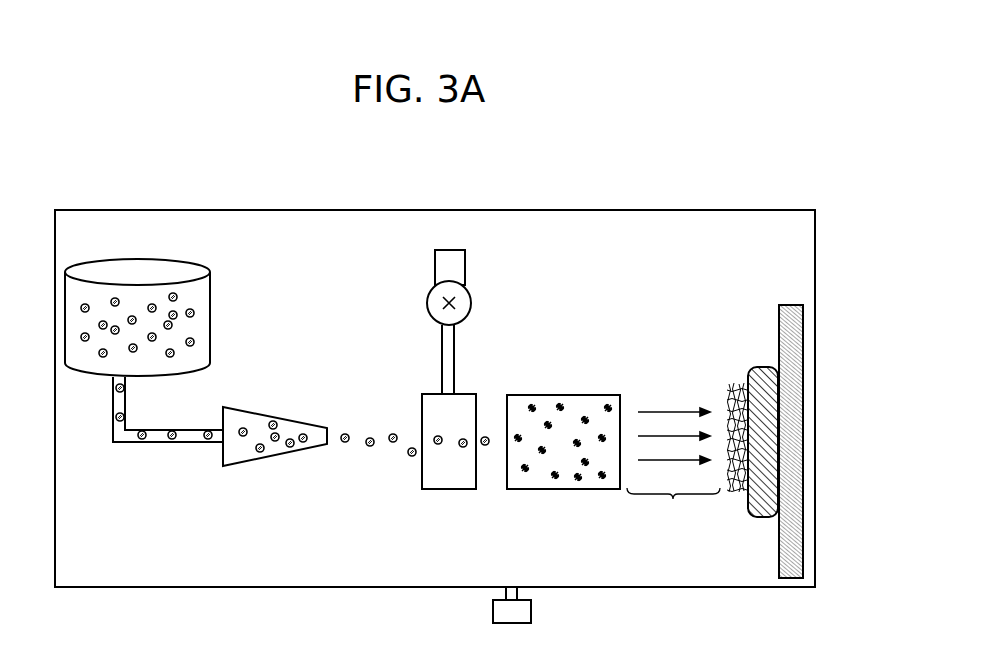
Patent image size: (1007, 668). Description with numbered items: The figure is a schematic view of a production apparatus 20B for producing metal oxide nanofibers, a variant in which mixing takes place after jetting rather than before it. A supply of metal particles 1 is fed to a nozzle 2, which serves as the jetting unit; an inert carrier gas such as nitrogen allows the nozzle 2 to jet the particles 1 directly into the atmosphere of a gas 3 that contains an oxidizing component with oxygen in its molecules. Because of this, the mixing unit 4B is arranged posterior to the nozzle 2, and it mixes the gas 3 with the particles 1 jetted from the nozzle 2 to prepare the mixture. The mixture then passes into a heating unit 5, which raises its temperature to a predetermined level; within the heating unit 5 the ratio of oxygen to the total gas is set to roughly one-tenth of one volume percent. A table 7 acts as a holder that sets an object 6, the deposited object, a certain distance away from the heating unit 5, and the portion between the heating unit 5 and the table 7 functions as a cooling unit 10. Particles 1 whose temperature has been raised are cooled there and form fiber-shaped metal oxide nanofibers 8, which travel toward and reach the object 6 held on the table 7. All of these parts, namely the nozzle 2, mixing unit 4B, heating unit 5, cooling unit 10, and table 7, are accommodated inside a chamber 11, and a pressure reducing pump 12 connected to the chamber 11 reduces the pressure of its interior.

The metal particles 1 is at (196, 312).
The nozzle 2 is at (277, 450).
The gas 3 is at (472, 308).
The mixing unit 4B is at (445, 480).
The heating unit 5 is at (577, 405).
The object 6 is at (767, 367).
The table 7 is at (792, 310).
The metal oxide nanofibers 8 is at (525, 470).
The cooling unit 10 is at (673, 469).
The chamber 11 is at (658, 208).
The pressure reducing pump 12 is at (526, 610).
The production apparatus 20B is at (747, 190).